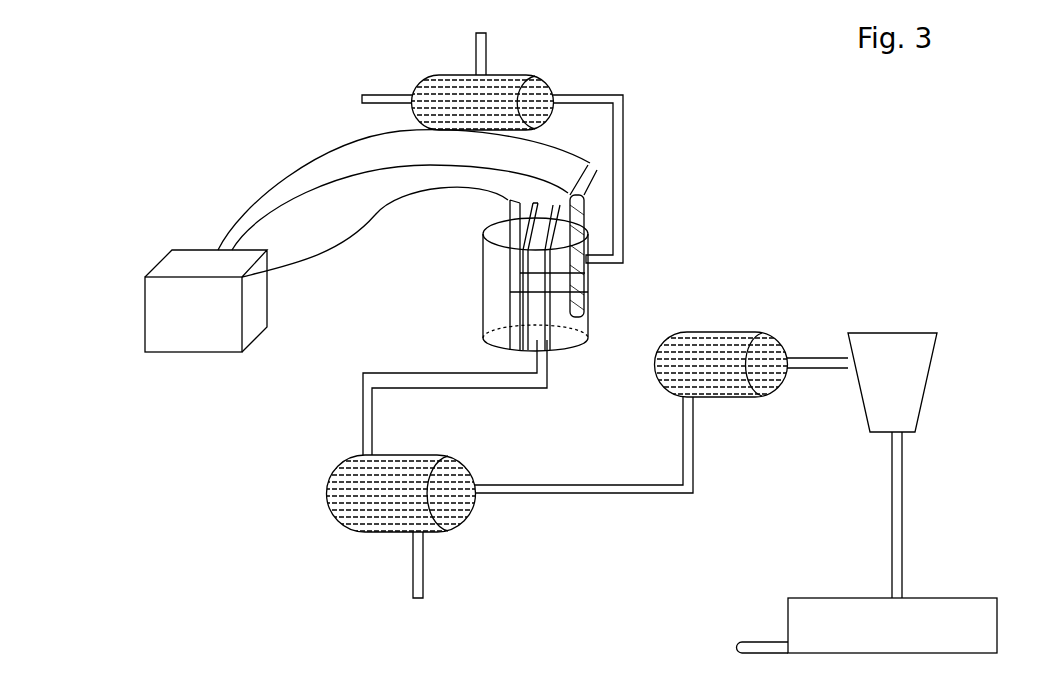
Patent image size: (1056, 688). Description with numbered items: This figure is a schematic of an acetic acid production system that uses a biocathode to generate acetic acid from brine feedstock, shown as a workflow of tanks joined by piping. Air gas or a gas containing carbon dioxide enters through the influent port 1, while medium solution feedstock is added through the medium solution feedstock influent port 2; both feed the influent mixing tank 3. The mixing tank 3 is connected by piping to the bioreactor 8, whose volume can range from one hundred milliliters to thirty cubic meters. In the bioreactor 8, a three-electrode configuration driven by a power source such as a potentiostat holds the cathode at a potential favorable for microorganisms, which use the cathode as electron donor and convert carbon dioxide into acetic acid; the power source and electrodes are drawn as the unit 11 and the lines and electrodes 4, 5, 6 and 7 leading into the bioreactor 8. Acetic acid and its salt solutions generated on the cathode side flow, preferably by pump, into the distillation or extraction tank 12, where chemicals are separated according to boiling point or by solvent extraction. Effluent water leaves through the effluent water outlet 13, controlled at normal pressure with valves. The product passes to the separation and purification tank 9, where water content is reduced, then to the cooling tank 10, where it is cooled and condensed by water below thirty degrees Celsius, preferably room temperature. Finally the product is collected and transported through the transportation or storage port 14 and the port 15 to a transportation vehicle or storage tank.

The influent port 1 is at (487, 35).
The medium solution feedstock influent port 2 is at (362, 95).
The influent mixing tank 3 is at (583, 93).
The supply lines 4 is at (588, 175).
The connecting pipe 5 is at (623, 250).
The inner tube 6 is at (585, 273).
The inner tube 7 is at (588, 292).
The bioreactor 8 is at (483, 283).
The separation and purification tank 9 is at (780, 343).
The cooling tank 10 is at (925, 385).
The control unit 11 is at (145, 312).
The distillation or extraction tank 12 is at (327, 492).
The effluent water outlet 13 is at (405, 598).
The transportation or storage port 14 is at (730, 647).
The port 15 is at (900, 627).